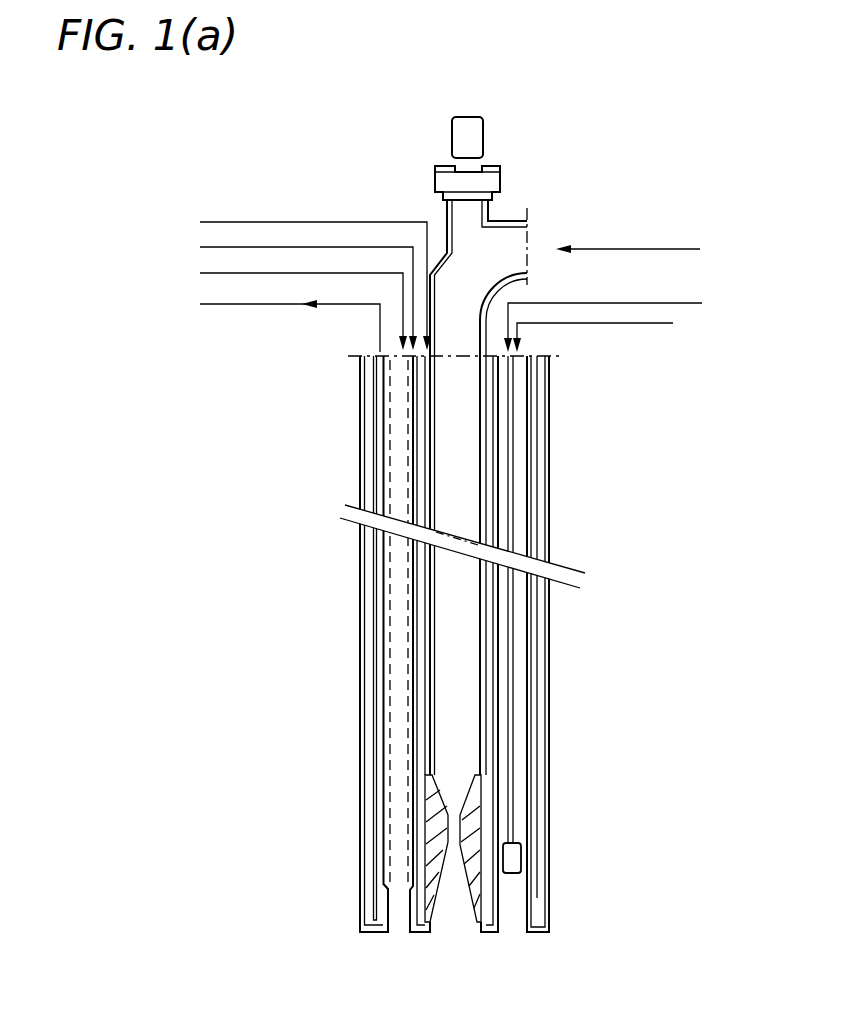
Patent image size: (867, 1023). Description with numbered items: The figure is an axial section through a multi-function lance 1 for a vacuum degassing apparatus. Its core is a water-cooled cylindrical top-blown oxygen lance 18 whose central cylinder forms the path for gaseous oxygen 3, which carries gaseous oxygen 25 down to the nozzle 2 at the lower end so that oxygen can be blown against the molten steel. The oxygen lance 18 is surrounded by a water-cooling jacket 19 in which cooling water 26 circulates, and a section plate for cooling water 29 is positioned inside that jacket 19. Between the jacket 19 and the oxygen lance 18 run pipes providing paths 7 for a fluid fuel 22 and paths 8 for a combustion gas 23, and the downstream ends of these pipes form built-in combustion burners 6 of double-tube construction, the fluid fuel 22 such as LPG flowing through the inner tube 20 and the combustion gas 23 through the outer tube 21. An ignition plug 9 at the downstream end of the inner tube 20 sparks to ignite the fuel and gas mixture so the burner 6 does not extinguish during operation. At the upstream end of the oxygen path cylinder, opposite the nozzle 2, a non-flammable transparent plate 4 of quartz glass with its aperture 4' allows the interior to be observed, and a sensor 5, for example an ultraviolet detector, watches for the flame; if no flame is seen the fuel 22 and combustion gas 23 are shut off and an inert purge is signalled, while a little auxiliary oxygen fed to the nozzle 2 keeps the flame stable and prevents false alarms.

The multi-function lance 1 is at (636, 567).
The nozzle 2 is at (438, 893).
The path for gaseous oxygen 3 is at (458, 612).
The non-flammable transparent plate 4 is at (490, 182).
The aperture 4' is at (532, 479).
The sensor 5 is at (464, 130).
The combustion burner 6 is at (395, 908).
The path for fluid fuel 7 is at (517, 417).
The path for combustion gas 8 is at (525, 478).
The ignition plug 9 is at (515, 857).
The water-cooled cylindrical top-blown oxygen lance 18 is at (433, 406).
The water-cooling jacket 19 is at (425, 698).
The inner tube 20 is at (385, 822).
The outer tube 21 is at (377, 790).
The fluid fuel 22 is at (215, 272).
The combustion gas 23 is at (212, 246).
The gaseous oxygen 25 is at (637, 248).
The cooling water 26 is at (344, 222).
The section plate for cooling water 29 is at (548, 778).